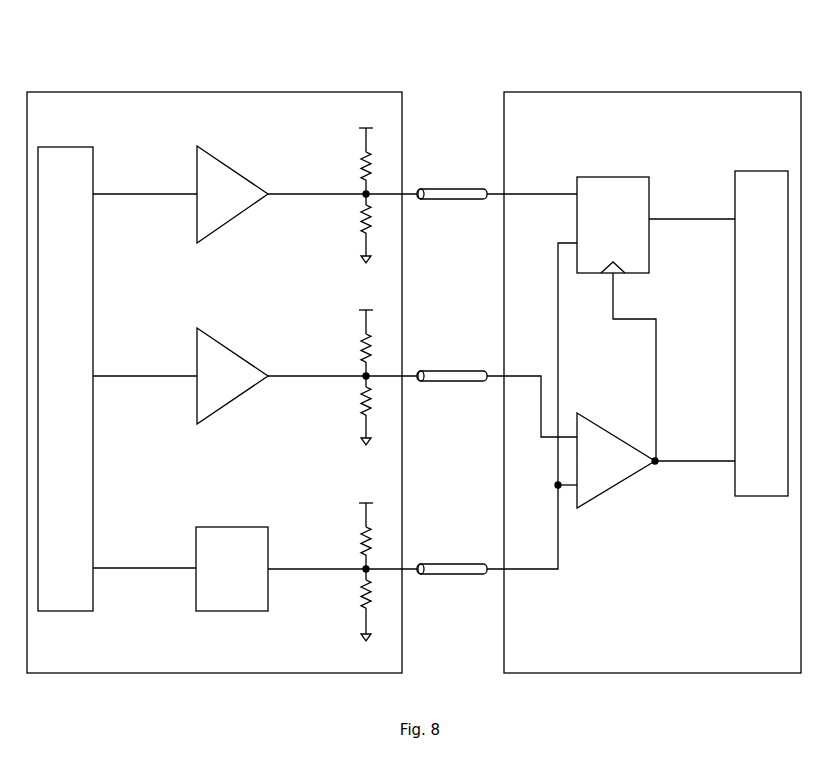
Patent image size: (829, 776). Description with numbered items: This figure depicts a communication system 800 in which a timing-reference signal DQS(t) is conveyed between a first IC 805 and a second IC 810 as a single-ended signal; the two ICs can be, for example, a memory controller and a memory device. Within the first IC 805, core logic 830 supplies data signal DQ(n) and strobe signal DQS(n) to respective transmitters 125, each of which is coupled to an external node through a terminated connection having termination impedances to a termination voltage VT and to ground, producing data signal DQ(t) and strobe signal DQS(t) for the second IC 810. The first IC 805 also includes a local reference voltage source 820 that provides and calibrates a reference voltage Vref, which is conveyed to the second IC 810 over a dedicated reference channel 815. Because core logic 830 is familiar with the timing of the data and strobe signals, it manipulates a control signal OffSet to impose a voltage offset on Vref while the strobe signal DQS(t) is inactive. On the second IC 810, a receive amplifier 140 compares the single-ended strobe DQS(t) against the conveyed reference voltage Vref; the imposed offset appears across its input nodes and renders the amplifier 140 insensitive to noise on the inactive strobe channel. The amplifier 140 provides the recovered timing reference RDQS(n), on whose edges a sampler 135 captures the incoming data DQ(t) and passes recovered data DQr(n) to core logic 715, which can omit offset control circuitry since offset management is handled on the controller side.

The communication system 800 is at (587, 52).
The first IC 805 is at (222, 382).
The second IC 810 is at (644, 382).
The reference channel 815 is at (468, 577).
The reference voltage source 820 is at (232, 569).
The core logic 830 is at (65, 379).
The core logic 715 is at (761, 333).
The transmitter 125 is at (232, 285).
The sampler 135 is at (613, 225).
The receive amplifier 140 is at (616, 460).